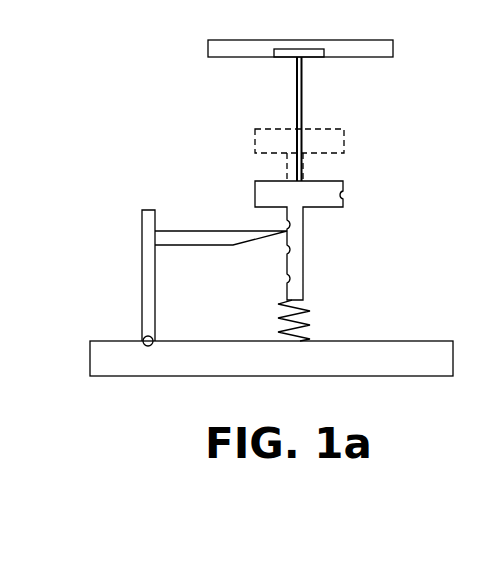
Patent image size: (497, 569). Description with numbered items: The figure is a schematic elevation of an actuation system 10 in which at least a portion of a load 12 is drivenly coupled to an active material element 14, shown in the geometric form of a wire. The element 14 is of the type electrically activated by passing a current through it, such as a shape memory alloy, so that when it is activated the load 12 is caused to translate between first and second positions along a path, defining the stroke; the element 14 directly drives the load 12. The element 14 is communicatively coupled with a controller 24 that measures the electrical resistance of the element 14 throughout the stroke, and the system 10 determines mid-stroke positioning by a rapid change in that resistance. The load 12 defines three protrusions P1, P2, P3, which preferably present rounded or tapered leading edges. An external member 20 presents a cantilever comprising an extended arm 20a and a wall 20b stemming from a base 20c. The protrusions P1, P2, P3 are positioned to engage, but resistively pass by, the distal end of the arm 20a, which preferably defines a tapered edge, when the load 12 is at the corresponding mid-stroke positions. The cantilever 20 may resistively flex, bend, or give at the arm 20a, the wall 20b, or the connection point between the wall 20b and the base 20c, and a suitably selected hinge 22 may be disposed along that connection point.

The actuation system 10 is at (151, 31).
The controller 24 is at (276, 58).
The active material element 14 is at (296, 95).
The load 12 is at (343, 190).
The external member 20 is at (111, 221).
The extended arm 20a is at (182, 231).
The wall 20b is at (141, 280).
The base 20c is at (90, 358).
The hinge 22 is at (146, 346).
The first protrusion P1 is at (287, 227).
The second protrusion P2 is at (287, 252).
The third protrusion P3 is at (287, 282).